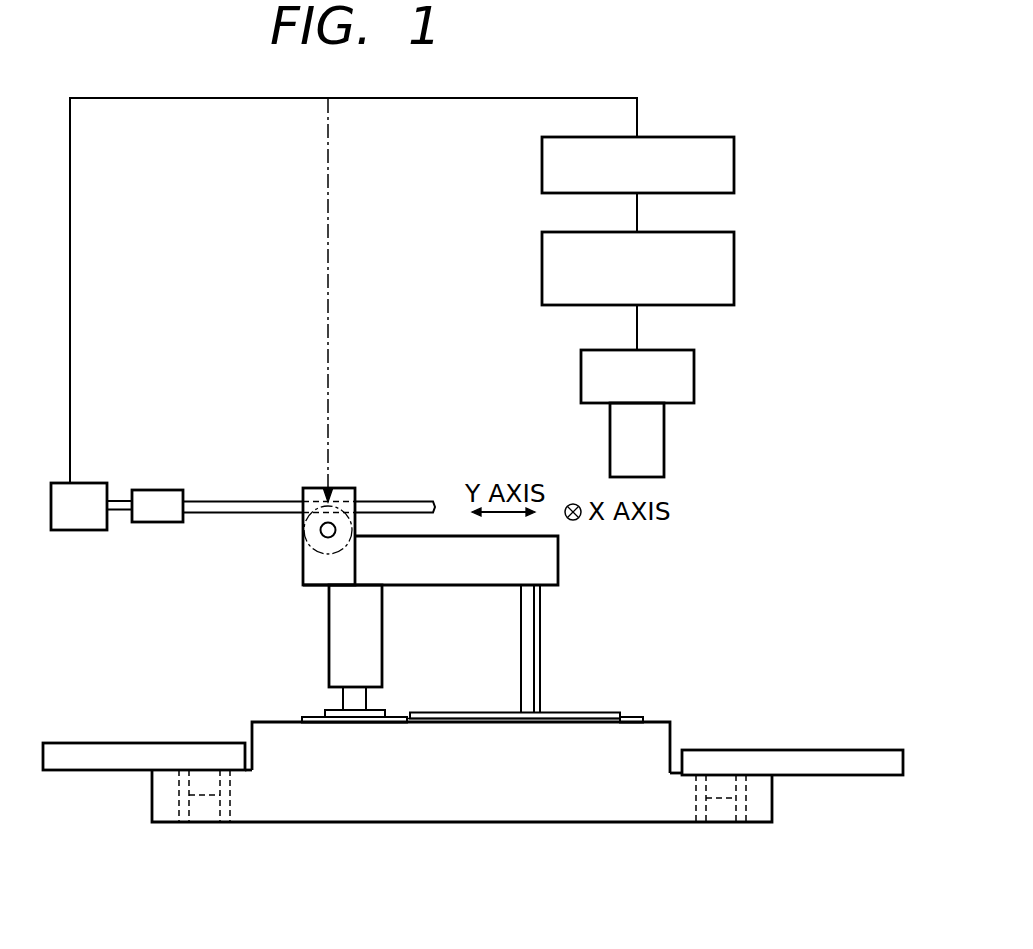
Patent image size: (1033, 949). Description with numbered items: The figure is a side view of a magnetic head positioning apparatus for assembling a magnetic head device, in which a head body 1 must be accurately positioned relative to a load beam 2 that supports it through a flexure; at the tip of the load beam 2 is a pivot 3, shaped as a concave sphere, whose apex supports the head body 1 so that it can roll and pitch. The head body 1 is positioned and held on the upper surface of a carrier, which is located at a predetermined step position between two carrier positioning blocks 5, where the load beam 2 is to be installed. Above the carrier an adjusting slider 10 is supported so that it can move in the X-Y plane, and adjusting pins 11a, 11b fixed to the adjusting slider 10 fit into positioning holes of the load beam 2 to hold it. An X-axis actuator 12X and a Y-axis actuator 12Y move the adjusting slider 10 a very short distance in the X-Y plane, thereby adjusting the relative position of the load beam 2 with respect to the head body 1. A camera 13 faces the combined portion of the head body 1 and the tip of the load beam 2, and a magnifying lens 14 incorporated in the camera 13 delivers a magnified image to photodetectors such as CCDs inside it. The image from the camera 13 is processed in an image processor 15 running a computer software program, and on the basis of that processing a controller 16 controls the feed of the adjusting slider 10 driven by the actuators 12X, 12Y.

The head body 1 is at (645, 720).
The load beam 2 is at (459, 711).
The pivot 3 is at (628, 713).
The carrier positioning block 5 is at (100, 743).
The adjusting slider 10 is at (442, 586).
The adjusting pin 11a is at (328, 630).
The adjusting pin 11b is at (536, 613).
The X-axis actuator 12X is at (317, 552).
The Y-axis actuator 12Y is at (83, 532).
The camera 13 is at (694, 372).
The magnifying lens 14 is at (664, 440).
The image processor 15 is at (734, 260).
The controller 16 is at (734, 156).